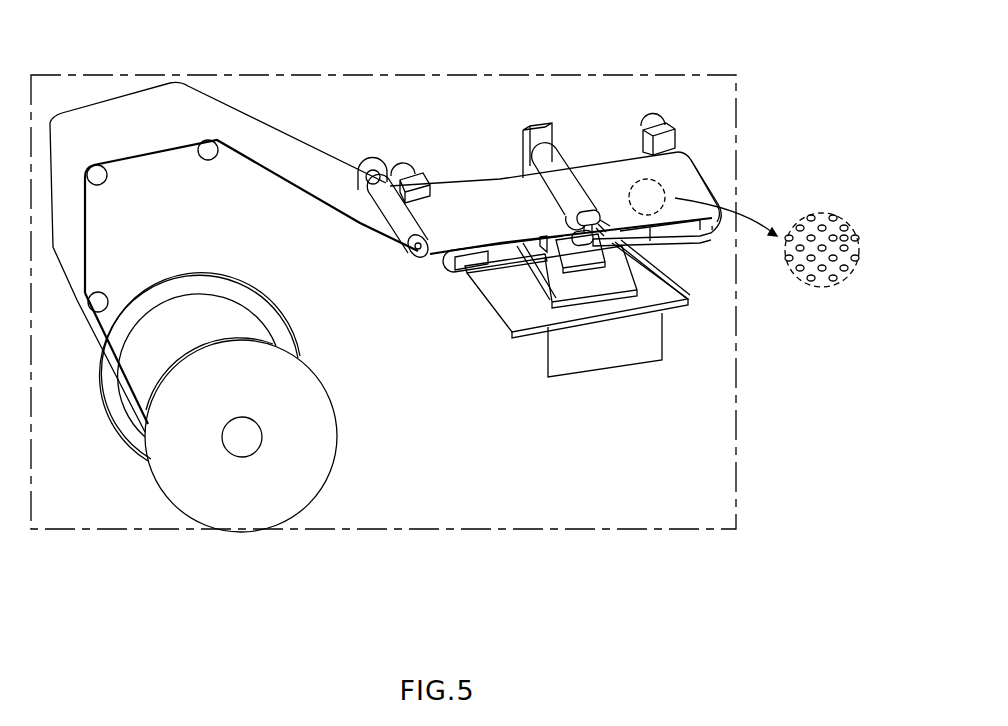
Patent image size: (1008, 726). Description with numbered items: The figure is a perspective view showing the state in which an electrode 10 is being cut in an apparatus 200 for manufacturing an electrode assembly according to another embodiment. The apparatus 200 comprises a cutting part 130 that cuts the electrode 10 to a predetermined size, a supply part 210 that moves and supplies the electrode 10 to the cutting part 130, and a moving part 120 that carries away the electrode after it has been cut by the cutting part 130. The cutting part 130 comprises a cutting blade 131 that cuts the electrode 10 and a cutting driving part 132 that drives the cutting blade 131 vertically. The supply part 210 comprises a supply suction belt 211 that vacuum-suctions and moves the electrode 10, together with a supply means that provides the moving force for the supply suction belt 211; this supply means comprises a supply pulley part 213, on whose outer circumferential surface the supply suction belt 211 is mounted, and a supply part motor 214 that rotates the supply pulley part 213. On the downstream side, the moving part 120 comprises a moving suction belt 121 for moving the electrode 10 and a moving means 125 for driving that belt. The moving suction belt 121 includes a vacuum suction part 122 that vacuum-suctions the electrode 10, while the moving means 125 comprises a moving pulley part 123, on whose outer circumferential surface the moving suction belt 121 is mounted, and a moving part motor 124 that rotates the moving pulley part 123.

The electrode 10 is at (467, 203).
The moving part 120 is at (708, 188).
The moving suction belt 121 is at (820, 214).
The vacuum suction part 122 is at (845, 236).
The moving pulley part 123 is at (720, 224).
The moving part motor 124 is at (652, 122).
The moving means 125 is at (848, 402).
The cutting part 130 is at (537, 116).
The cutting blade 131 is at (600, 232).
The cutting driving part 132 is at (592, 207).
The apparatus for manufacturing an electrode assembly 200 is at (591, 103).
The supply part 210 is at (497, 275).
The supply suction belt 211 is at (560, 268).
The supply pulley part 213 is at (452, 263).
The supply part motor 214 is at (403, 167).